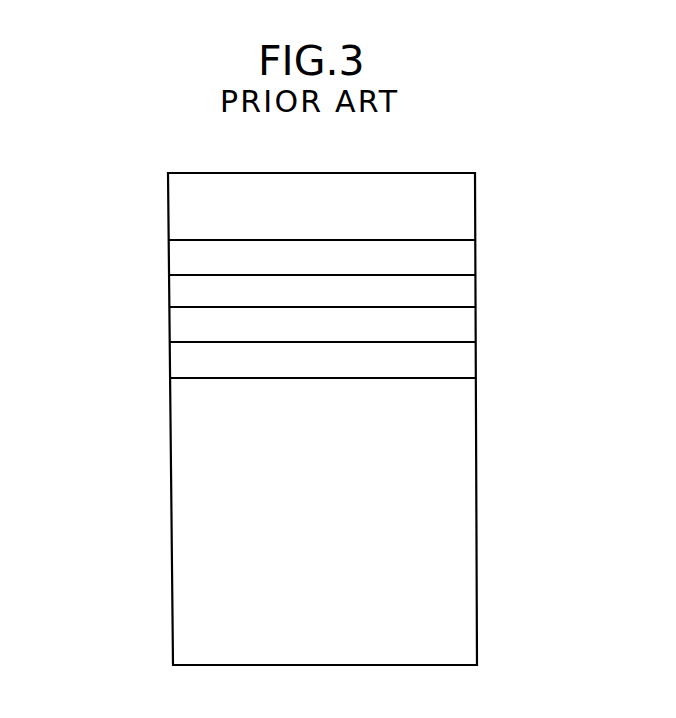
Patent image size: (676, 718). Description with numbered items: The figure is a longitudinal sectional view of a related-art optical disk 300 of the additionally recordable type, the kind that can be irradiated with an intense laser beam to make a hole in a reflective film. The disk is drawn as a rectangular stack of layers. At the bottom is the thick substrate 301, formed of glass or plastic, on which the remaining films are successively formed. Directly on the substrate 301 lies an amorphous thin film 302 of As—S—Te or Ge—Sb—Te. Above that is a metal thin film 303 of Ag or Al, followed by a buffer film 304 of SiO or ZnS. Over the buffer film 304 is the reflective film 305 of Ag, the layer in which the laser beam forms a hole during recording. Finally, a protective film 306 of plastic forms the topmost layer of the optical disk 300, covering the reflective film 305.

The optical disk 300 is at (104, 192).
The substrate 301 is at (472, 488).
The amorphous thin film 302 is at (472, 359).
The metal thin film 303 is at (472, 324).
The buffer film 304 is at (472, 289).
The reflective film 305 is at (472, 258).
The protective film 306 is at (472, 206).